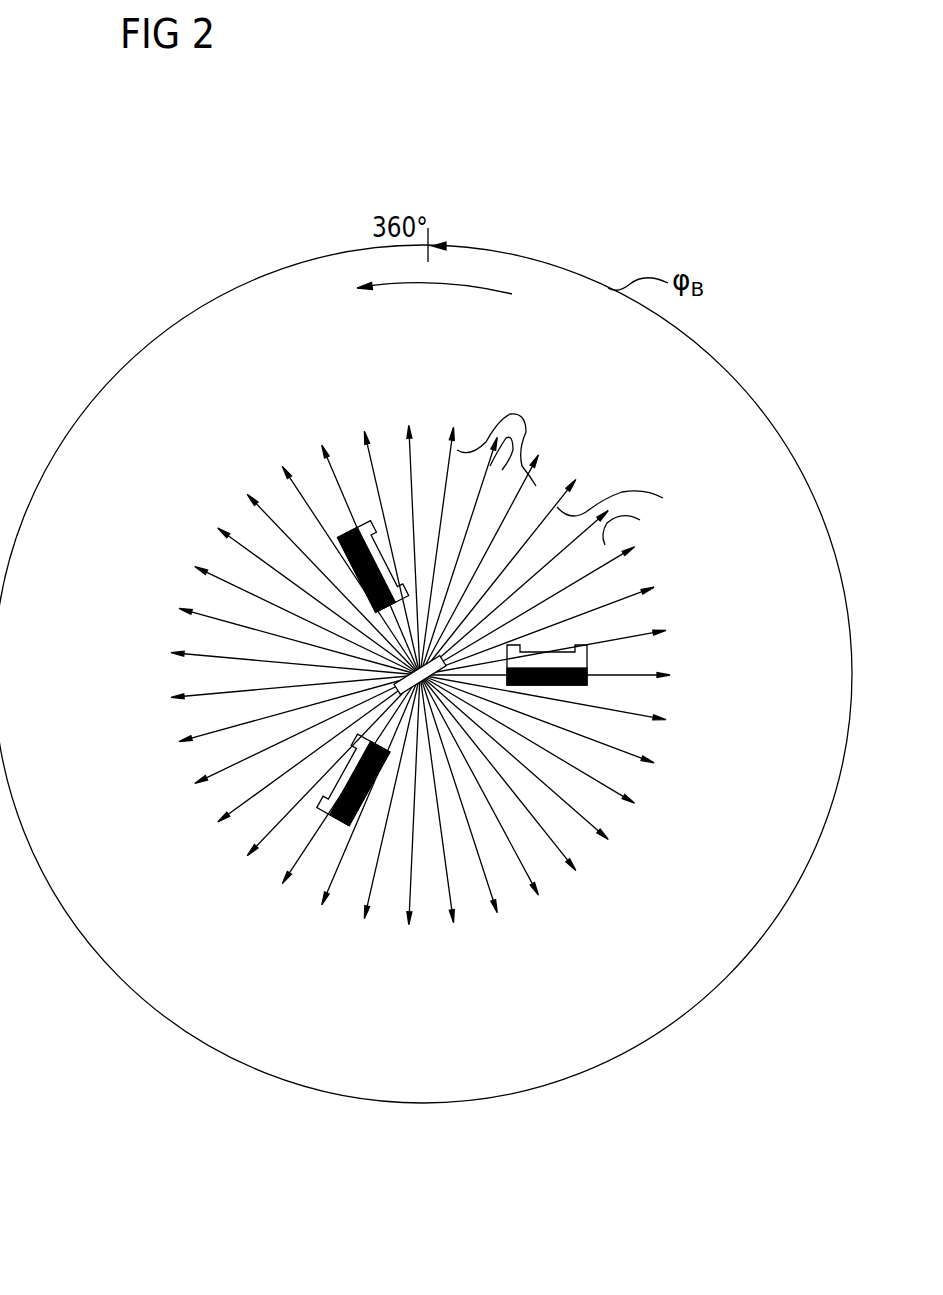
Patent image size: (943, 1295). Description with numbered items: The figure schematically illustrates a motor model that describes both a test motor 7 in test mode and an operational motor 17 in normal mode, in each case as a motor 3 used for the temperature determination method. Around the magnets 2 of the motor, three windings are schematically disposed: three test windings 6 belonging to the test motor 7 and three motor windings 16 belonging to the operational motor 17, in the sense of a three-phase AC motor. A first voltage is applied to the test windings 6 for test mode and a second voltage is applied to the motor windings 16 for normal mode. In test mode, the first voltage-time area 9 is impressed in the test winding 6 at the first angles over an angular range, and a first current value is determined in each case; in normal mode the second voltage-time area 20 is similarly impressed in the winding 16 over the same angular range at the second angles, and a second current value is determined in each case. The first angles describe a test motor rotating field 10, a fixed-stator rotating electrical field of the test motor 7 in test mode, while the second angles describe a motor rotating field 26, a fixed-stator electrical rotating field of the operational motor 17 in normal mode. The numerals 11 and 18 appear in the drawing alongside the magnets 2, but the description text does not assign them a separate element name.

The motor 3 is at (426, 666).
The test motor 7 is at (426, 666).
The operational motor 17 is at (243, 328).
The test motor rotating field 10 is at (481, 320).
The motor rotating field 26 is at (410, 295).
The test windings 6 is at (441, 682).
The motor windings 16 is at (708, 700).
The first voltage-time area 9 is at (657, 459).
The second voltage-time area 20 is at (657, 459).
The magnets 2 is at (393, 853).
The magnets 11 is at (393, 853).
The magnets 18 is at (417, 692).